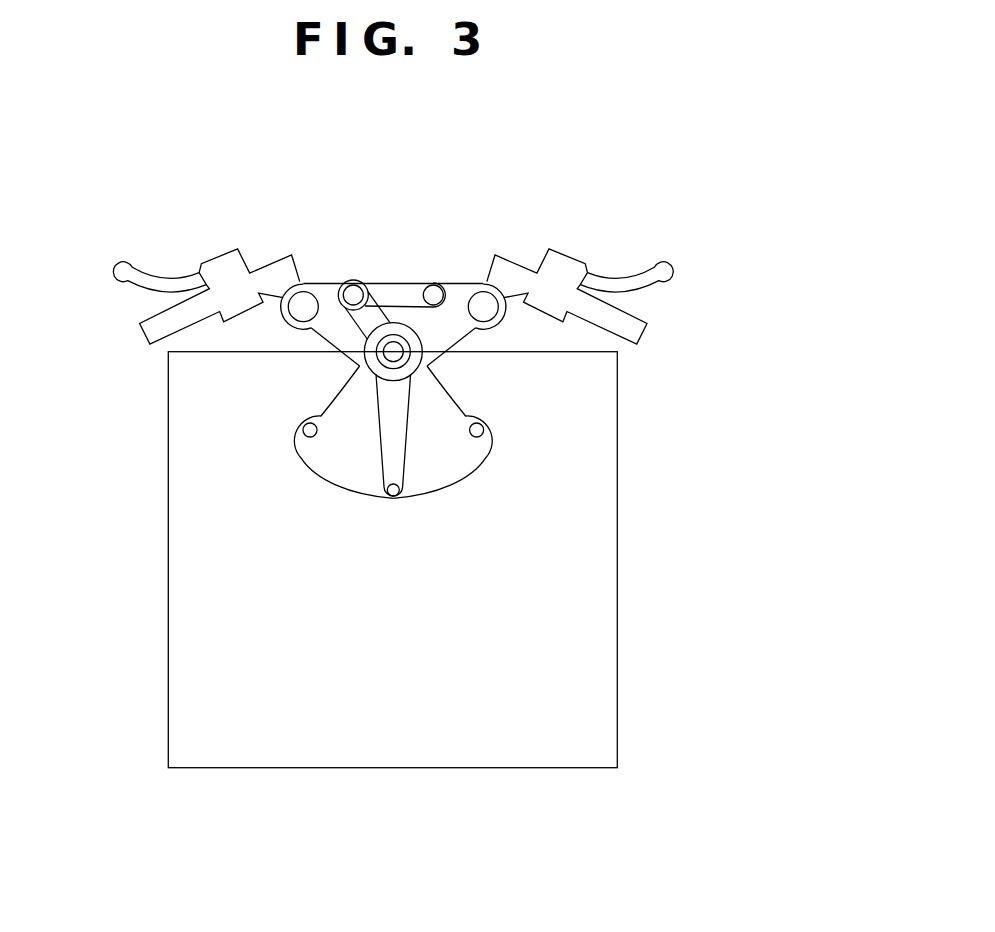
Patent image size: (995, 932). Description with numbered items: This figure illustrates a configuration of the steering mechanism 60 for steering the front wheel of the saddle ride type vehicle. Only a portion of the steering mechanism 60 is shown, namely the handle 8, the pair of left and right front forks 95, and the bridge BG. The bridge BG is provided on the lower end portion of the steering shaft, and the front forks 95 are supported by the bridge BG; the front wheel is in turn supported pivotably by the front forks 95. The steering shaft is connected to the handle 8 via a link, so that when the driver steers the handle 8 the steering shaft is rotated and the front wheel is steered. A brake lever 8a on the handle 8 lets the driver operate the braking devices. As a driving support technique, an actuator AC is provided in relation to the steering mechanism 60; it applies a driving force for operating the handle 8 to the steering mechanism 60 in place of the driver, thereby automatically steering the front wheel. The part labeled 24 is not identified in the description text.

The handle 8 is at (137, 322).
The brake lever 8a is at (122, 261).
The front forks 95 is at (308, 281).
The steering mechanism 60 is at (417, 235).
The bridge BG is at (337, 282).
The link 24 is at (377, 308).
The actuator AC is at (618, 573).